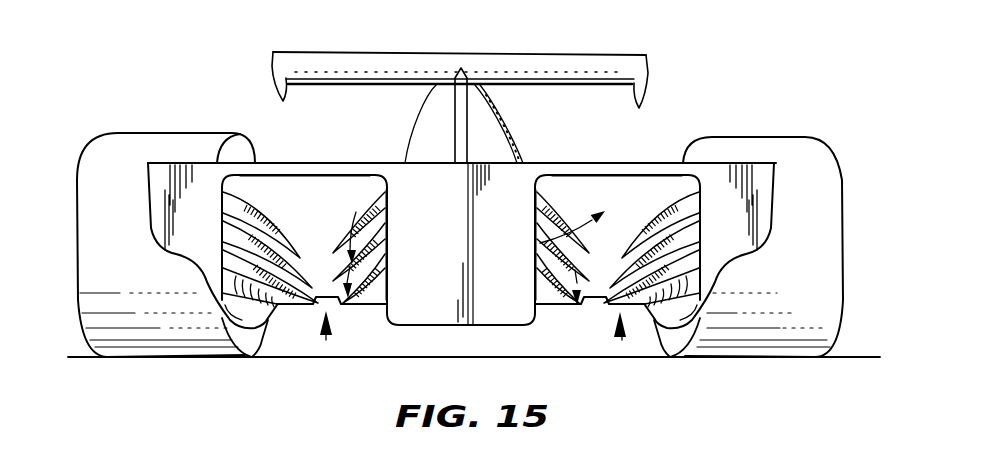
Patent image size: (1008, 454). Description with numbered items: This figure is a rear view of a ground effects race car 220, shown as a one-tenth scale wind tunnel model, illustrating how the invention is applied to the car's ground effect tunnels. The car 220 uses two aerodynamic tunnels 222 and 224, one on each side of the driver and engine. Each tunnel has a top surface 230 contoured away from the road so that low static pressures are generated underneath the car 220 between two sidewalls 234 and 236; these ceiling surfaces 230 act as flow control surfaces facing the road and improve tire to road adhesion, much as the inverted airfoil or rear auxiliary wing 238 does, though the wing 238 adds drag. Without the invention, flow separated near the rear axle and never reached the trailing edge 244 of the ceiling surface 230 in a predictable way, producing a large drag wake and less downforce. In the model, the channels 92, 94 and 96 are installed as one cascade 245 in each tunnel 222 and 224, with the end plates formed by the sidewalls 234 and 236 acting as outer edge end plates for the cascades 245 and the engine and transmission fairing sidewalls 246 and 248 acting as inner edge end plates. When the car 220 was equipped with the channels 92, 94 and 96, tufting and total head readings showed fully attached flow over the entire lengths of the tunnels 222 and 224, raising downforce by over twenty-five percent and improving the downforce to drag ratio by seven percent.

The ground effects race car 220 is at (655, 165).
The aerodynamic tunnel 222 is at (276, 192).
The aerodynamic tunnel 224 is at (610, 198).
The top surface 230 is at (313, 186).
The sidewall 234 is at (258, 338).
The sidewall 236 is at (653, 332).
The inverted airfoil 238 is at (526, 62).
The trailing edge 244 is at (350, 193).
The cascade 245 is at (326, 335).
The engine and transmission fairing sidewall 246 is at (382, 290).
The engine and transmission fairing sidewall 248 is at (540, 243).
The channel 92 is at (351, 308).
The channel 94 is at (365, 300).
The channel 96 is at (351, 177).